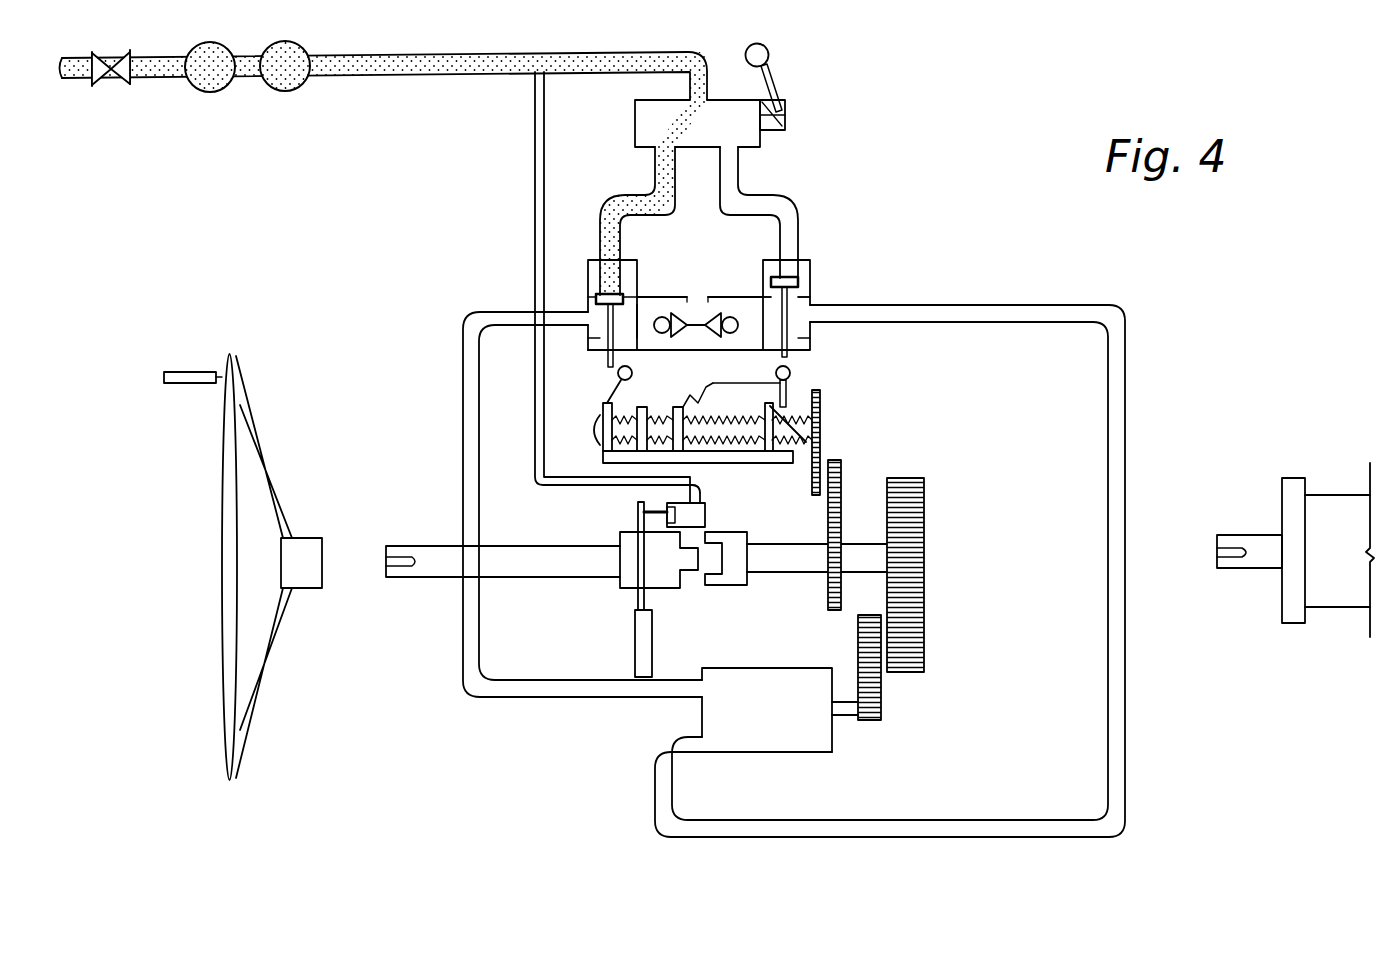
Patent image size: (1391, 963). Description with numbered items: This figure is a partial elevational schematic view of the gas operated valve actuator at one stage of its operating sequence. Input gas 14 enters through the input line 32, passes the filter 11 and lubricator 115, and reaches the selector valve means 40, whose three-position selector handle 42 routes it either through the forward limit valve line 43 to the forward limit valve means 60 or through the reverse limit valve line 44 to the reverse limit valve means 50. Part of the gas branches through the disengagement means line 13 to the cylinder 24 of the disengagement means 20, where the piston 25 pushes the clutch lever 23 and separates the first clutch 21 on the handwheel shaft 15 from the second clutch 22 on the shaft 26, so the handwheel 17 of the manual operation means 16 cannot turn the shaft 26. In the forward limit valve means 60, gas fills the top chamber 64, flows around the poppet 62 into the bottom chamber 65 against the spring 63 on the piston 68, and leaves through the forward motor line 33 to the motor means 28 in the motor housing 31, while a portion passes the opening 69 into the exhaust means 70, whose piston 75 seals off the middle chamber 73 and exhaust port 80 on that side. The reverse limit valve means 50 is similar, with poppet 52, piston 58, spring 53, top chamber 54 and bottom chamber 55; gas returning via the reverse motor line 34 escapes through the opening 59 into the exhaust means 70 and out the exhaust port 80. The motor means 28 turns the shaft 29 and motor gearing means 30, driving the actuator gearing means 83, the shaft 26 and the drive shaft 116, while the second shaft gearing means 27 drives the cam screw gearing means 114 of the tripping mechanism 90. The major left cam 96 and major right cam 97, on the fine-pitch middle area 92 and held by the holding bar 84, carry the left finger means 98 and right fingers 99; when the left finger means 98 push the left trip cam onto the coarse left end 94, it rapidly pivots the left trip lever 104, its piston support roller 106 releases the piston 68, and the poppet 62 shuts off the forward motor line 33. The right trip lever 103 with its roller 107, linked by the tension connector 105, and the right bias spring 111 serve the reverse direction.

The filter 11 is at (203, 93).
The disengagement means line 13 is at (535, 108).
The input gas 14 is at (82, 80).
The handwheel shaft 15 is at (430, 546).
The manual operation means 16 is at (273, 567).
The handwheel 17 is at (302, 538).
The disengagement means 20 is at (672, 584).
The first clutch 21 is at (668, 576).
The second clutch 22 is at (745, 585).
The clutch lever 23 is at (638, 597).
The cylinder 24 is at (705, 520).
The piston 25 is at (643, 500).
The shaft 26 is at (775, 543).
The second shaft gearing means 27 is at (841, 530).
The motor means 28 is at (768, 680).
The shaft 29 is at (860, 715).
The motor gearing means 30 is at (882, 710).
The motor housing 31 is at (802, 753).
The input line 32 is at (350, 74).
The forward motor line 33 is at (463, 345).
The reverse motor line 34 is at (1125, 710).
The selector valve means 40 is at (630, 104).
The selector handle 42 is at (782, 75).
The forward limit valve line 43 is at (654, 166).
The reverse limit valve line 44 is at (740, 170).
The reverse limit valve means 50 is at (801, 279).
The poppet 52 is at (789, 281).
The spring 53 is at (808, 318).
The top chamber 54 is at (781, 272).
The bottom chamber 55 is at (810, 345).
The piston 58 is at (800, 348).
The opening 59 is at (762, 312).
The forward limit valve means 60 is at (610, 285).
The poppet 62 is at (626, 302).
The spring 63 is at (600, 306).
The top chamber 64 is at (622, 270).
The bottom chamber 65 is at (596, 352).
The piston 68 is at (595, 338).
The opening 69 is at (640, 322).
The exhaust means 70 is at (700, 288).
The middle chamber 73 is at (688, 395).
The piston 75 is at (686, 323).
The exhaust port 80 is at (691, 297).
The actuator gearing means 83 is at (924, 650).
The holding bar 84 is at (702, 490).
The tripping mechanism 90 is at (734, 424).
The middle area 92 is at (700, 420).
The left end 94 is at (597, 428).
The major left cam 96 is at (610, 462).
The major right cam 97 is at (700, 460).
The left finger means 98 is at (635, 410).
The right fingers 99 is at (680, 408).
The right trip lever 103 is at (790, 385).
The left trip lever 104 is at (606, 400).
The tension connector 105 is at (707, 387).
The piston support roller 106 is at (618, 378).
The roller 107 is at (791, 373).
The right bias spring 111 is at (790, 440).
The cam screw gearing means 114 is at (821, 405).
The lubricator 115 is at (287, 92).
The drive shaft 116 is at (1230, 535).